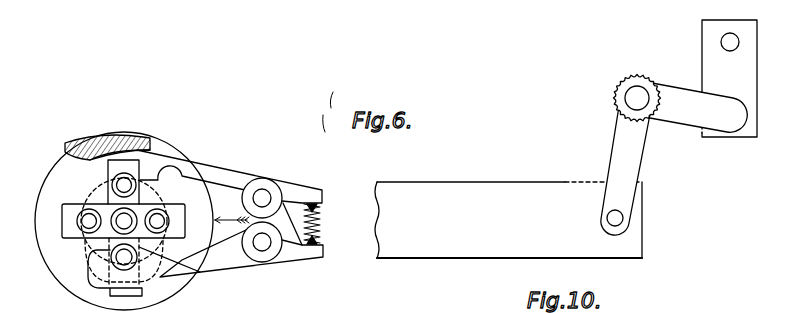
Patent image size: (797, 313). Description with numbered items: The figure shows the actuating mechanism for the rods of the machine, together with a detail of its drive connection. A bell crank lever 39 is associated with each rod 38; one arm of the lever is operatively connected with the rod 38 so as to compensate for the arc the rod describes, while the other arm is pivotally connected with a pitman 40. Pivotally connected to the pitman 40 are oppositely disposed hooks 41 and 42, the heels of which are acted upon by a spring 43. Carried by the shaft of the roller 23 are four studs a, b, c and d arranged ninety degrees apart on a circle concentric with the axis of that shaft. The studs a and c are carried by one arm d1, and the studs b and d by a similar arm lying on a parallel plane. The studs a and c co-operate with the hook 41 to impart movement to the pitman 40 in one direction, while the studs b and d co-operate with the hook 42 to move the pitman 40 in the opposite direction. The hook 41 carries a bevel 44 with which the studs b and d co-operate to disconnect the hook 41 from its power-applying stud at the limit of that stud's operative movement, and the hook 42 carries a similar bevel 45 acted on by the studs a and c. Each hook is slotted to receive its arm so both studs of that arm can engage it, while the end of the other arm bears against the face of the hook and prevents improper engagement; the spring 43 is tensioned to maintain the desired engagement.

In FIG. 6, the roller 23 is at (50, 173).
In FIG. 6, the bevel 44 is at (78, 160).
In FIG. 6, the bevel 45 is at (183, 237).
In FIG. 6, the hook 41 is at (210, 165).
In FIG. 6, the hook 42 is at (200, 265).
In FIG. 6, the spring 43 is at (323, 221).
In FIG. 6, the arm d1 is at (126, 184).
In FIG. 6, the stud d is at (150, 148).
In FIG. 6, the stud a is at (158, 219).
In FIG. 6, the stud b is at (128, 261).
In FIG. 6, the stud c is at (86, 233).
In FIG. 10, the rod 38 is at (701, 58).
In FIG. 10, the bell crank lever 39 is at (633, 156).
In FIG. 10, the pitman 40 is at (448, 188).